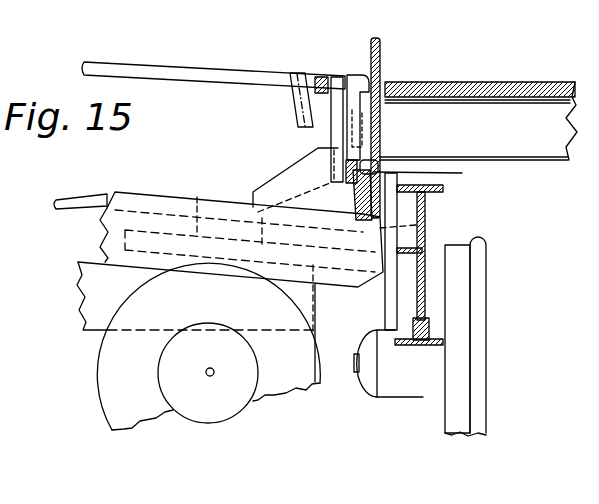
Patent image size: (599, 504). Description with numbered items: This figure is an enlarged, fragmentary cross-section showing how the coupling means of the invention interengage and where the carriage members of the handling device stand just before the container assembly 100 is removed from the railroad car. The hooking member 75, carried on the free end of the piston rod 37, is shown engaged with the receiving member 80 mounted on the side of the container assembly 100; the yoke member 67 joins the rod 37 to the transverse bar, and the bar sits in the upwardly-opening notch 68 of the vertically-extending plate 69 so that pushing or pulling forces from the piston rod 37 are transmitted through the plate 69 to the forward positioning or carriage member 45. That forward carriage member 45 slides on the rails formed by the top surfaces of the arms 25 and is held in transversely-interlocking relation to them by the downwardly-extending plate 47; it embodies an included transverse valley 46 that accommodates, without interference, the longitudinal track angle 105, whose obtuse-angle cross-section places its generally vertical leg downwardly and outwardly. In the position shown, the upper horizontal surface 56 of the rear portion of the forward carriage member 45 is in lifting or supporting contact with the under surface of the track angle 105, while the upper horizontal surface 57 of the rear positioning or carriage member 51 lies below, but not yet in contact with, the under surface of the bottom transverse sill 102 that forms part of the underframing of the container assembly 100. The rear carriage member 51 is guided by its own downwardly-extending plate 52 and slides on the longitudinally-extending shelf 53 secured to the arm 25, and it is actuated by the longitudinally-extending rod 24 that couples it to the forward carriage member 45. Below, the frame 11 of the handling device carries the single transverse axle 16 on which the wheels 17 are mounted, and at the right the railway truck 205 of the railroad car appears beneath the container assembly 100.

The frame 11 is at (92, 283).
The transverse axle 16 is at (212, 368).
The wheels 17 is at (110, 401).
The longitudinally-extending rods 24 is at (83, 200).
The arms 25 is at (100, 238).
The piston rods 37 is at (145, 72).
The forward positioning or carriage member 45 is at (387, 177).
The transverse valley 46 is at (327, 196).
The downwardly-extending plates 47 is at (283, 173).
The rear positioning or carriage member 51 is at (432, 174).
The downwardly-extending plates 52 is at (420, 226).
The longitudinally-extending shelves 53 is at (189, 202).
The upper horizontal surface 56 is at (363, 162).
The upper horizontal surface 57 is at (432, 175).
The yoke members 67 is at (320, 75).
The upwardly-opening notches 68 is at (302, 114).
The vertically-extending plates 69 is at (290, 100).
The hooking member 75 is at (357, 75).
The receiving member 80 is at (434, 134).
The container assembly 100 is at (380, 48).
The bottom transverse sills 102 is at (527, 163).
The track angle 105 is at (346, 170).
The railway trucks 205 is at (574, 314).